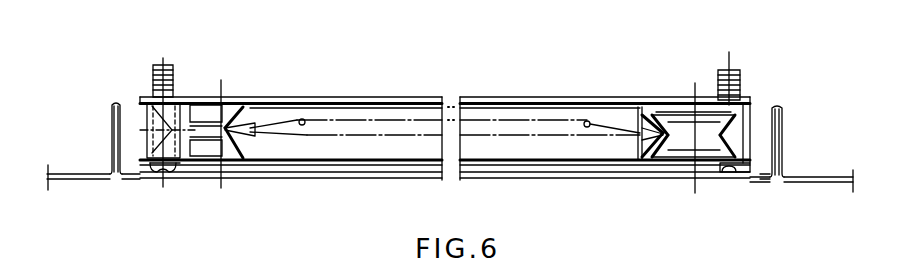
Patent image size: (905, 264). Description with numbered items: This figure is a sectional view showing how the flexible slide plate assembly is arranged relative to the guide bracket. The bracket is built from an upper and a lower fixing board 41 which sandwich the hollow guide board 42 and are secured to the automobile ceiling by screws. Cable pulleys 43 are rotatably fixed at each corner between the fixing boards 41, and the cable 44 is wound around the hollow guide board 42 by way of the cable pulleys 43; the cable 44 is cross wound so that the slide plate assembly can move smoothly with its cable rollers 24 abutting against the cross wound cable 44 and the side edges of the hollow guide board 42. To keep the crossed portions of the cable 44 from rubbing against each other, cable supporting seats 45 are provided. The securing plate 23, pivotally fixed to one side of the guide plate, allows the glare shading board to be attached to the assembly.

The securing plate 23 is at (815, 180).
The cable roller 24 is at (678, 125).
The upper and lower fixing board 41 is at (748, 163).
The hollow guide board 42 is at (510, 103).
The cable pulley 43 is at (250, 130).
The cable 44 is at (398, 120).
The cable supporting seat 45 is at (305, 120).